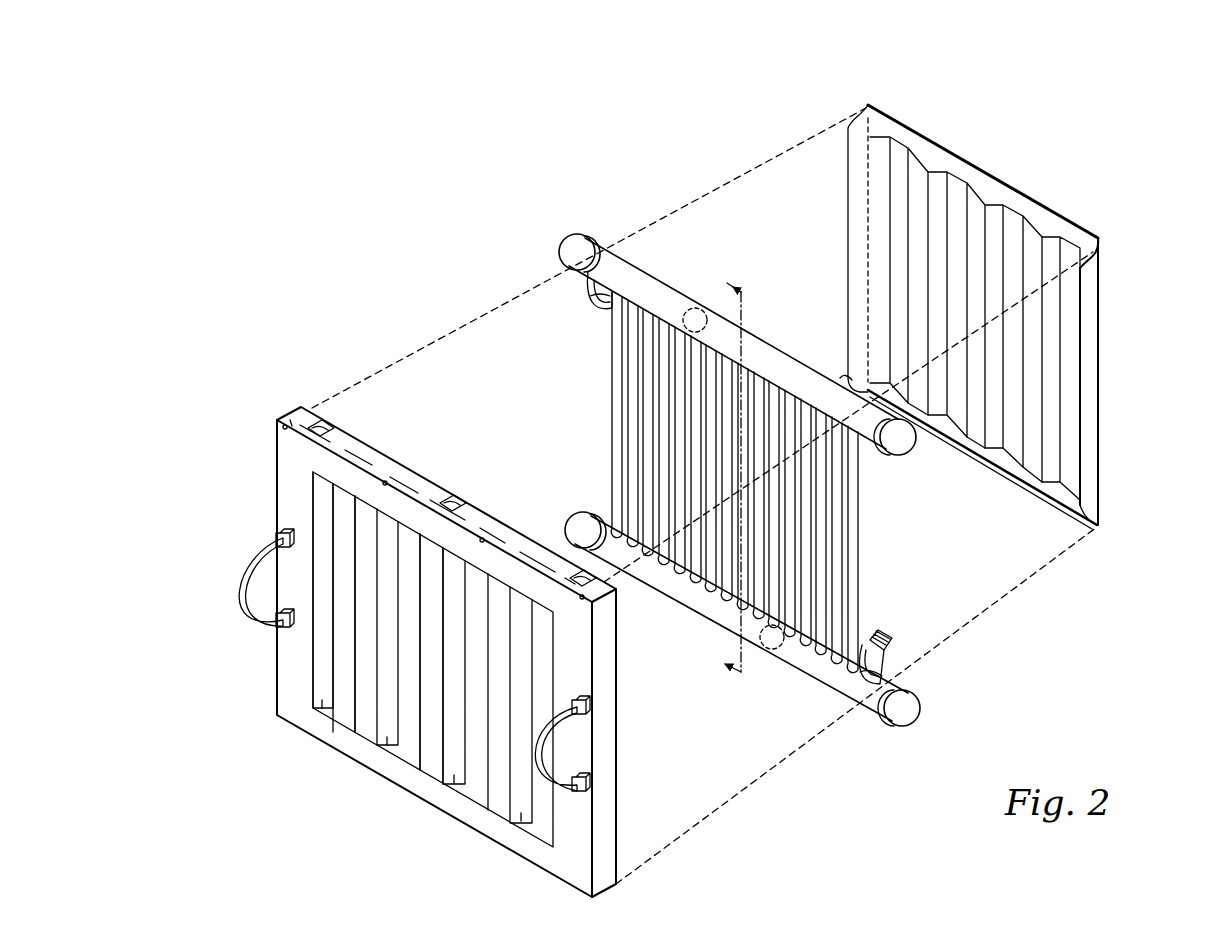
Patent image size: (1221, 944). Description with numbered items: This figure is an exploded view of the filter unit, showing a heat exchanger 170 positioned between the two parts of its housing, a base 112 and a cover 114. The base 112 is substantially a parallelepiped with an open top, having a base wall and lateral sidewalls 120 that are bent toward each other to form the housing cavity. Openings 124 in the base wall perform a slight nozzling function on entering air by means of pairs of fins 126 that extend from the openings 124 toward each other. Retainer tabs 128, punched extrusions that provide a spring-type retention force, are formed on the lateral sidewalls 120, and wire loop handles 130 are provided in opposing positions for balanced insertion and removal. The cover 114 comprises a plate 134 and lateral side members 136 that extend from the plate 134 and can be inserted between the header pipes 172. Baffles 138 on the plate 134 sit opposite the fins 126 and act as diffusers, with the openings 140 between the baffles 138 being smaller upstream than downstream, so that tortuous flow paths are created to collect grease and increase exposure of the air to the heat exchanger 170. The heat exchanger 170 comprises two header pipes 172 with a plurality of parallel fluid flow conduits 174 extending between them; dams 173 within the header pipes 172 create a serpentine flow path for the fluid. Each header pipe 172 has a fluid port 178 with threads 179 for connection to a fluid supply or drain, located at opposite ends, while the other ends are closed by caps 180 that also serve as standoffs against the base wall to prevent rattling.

The base 112 is at (250, 478).
The cover 114 is at (1056, 150).
The lateral sidewalls 120 is at (610, 742).
The openings 124 is at (343, 702).
The fins 126 is at (320, 690).
The retainer tabs 128 is at (335, 422).
The handles 130 is at (240, 600).
The plate 134 is at (927, 152).
The lateral side members 136 is at (860, 205).
The baffles 138 is at (893, 165).
The openings 140 is at (1033, 447).
The heat exchanger 170 is at (557, 200).
The header pipes 172 is at (762, 360).
The dams 173 is at (700, 309).
The fluid flow conduits 174 is at (650, 440).
The fluid port 178 is at (592, 300).
The threads 179 is at (889, 638).
The caps 180 is at (595, 240).